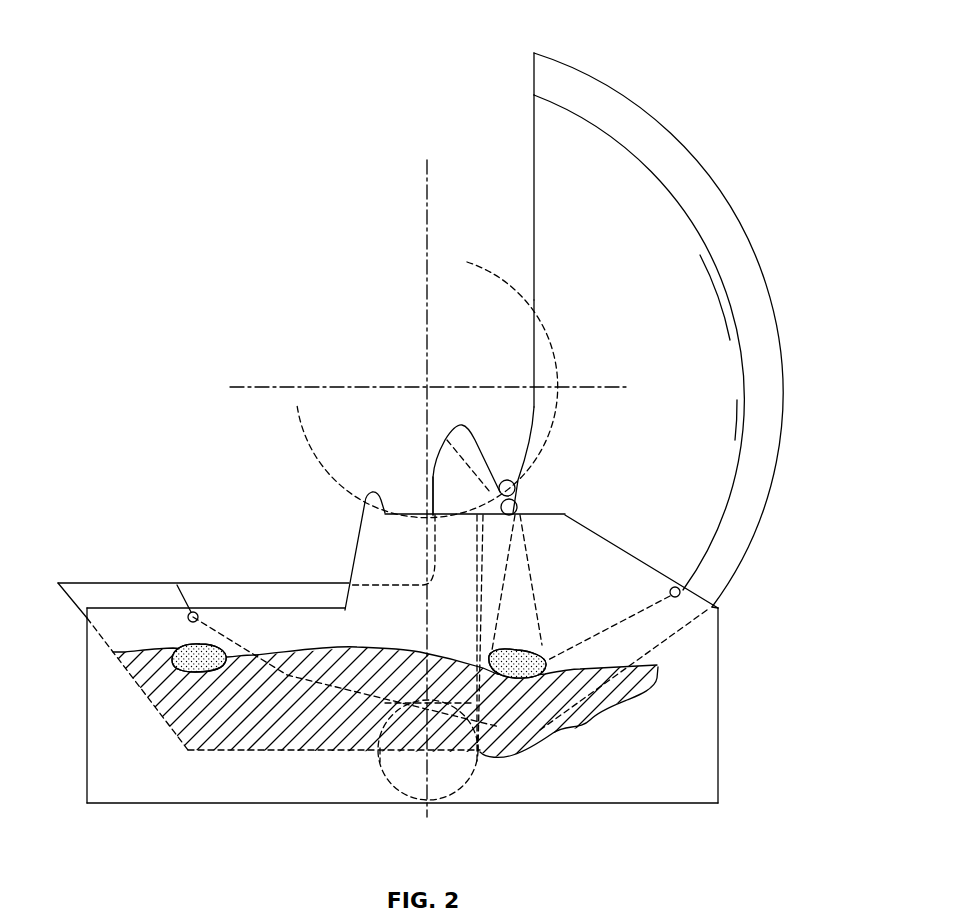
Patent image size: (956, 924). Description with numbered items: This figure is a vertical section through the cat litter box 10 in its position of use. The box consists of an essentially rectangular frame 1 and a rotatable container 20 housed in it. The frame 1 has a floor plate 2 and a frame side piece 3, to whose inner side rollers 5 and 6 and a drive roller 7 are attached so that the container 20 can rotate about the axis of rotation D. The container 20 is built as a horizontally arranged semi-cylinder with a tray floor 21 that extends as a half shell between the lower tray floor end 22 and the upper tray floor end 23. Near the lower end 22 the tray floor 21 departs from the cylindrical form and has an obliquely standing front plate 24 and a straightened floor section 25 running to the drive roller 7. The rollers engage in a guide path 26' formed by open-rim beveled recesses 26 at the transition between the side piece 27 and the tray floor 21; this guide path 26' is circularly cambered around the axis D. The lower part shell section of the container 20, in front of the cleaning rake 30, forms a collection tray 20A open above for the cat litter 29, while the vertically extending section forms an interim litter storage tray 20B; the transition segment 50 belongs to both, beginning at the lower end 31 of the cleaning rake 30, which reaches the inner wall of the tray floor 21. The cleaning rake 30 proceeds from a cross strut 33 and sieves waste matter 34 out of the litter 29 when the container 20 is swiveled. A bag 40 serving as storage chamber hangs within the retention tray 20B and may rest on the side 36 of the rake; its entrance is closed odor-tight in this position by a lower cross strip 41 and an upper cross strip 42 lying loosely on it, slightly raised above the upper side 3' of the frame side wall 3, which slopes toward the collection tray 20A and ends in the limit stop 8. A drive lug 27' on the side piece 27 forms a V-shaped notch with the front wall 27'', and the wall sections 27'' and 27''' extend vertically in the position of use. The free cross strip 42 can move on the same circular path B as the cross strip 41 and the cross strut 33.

The cat litter box 10 is at (328, 239).
The container 20 is at (665, 77).
The tray floor 21 is at (677, 138).
The recesses 26 is at (658, 342).
The side piece 27 is at (760, 294).
The guide path 26' is at (792, 397).
The upper tray floor end 23 is at (534, 53).
The interim litter storage tray 20B is at (552, 152).
The front wall 27'' is at (497, 287).
The drive lug 27' is at (561, 458).
The collection tray 20A is at (247, 565).
The lower tray floor end 22 is at (58, 583).
The limit stop 8 is at (365, 502).
The upper side of frame side wall 3' is at (377, 489).
The roller 5 is at (189, 620).
The cross strut 33 is at (418, 452).
The side partial wall section 27''' is at (385, 477).
The upper cross strip 42 is at (516, 488).
The lower cross strip 41 is at (518, 506).
The circular path B is at (547, 318).
The axis of rotation D is at (427, 387).
The frame 1 is at (738, 643).
The frame side piece 3 is at (738, 705).
The floor plate 2 is at (630, 805).
The roller 6 is at (688, 590).
The front plate 24 is at (156, 731).
The straightened floor section 25 is at (232, 753).
The cat litter 29 is at (397, 665).
The transition segment 50 is at (569, 713).
The waste matter 34 is at (177, 663).
The side of cleaning rake 36 is at (536, 643).
The cleaning rake 30 is at (475, 596).
The bag 40 is at (537, 590).
The lower end of cleaning rake 31 is at (485, 753).
The drive roller 7 is at (380, 760).